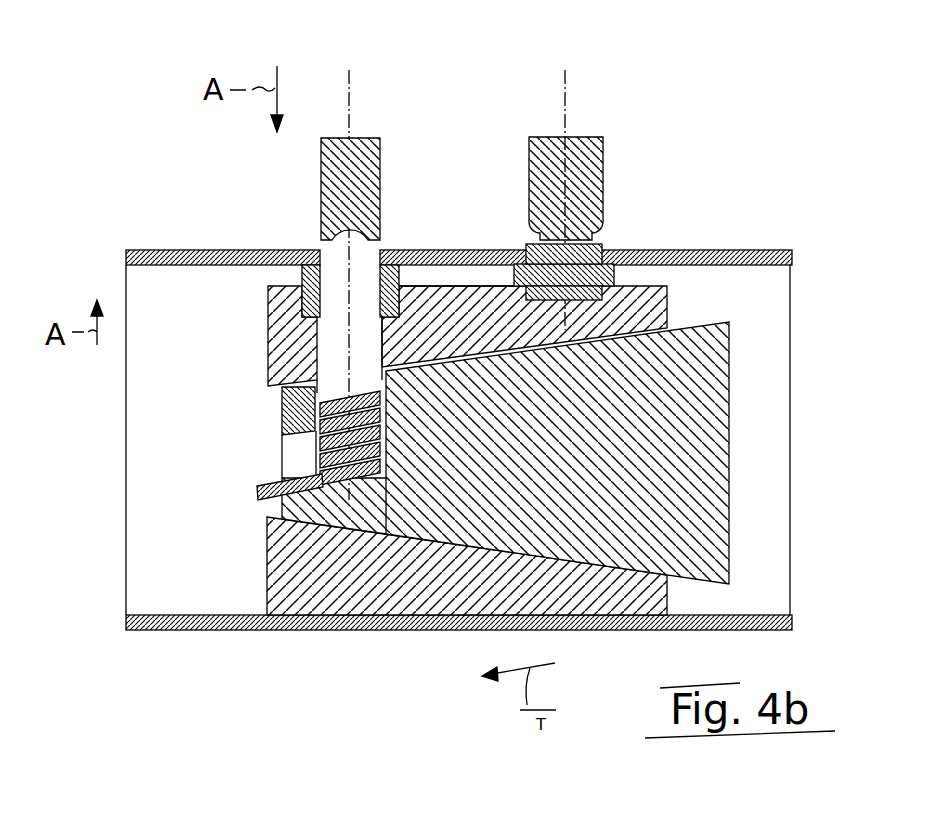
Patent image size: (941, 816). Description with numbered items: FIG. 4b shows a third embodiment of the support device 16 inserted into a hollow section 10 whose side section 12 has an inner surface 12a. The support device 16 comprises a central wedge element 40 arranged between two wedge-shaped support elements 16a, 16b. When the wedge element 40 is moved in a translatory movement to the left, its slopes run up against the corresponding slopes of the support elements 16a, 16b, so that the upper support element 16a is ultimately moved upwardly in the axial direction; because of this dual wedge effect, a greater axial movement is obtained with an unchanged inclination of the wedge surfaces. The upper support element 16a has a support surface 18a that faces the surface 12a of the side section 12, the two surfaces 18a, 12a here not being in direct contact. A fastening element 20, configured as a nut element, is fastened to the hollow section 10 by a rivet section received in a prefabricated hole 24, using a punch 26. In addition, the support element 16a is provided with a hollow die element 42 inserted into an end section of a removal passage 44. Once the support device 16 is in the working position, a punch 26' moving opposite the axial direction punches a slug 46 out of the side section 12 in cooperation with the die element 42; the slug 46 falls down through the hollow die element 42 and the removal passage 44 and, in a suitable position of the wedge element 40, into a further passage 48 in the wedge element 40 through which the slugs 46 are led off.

The hollow section 10 is at (216, 212).
The side section 12 is at (146, 250).
The surface of side section 12a is at (145, 277).
The support device 16 is at (822, 610).
The support element 16a is at (667, 303).
The support element 16b is at (267, 578).
The support surface 18a is at (462, 287).
The fastening element 20 is at (622, 272).
The prefabricated hole 24 is at (366, 257).
The punch 26 is at (600, 185).
The punch 26' is at (393, 134).
The wedge element 40 is at (733, 350).
The die element 42 is at (403, 290).
The removal passage 44 is at (333, 343).
The slug 46 is at (282, 413).
The further passage 48 is at (292, 459).